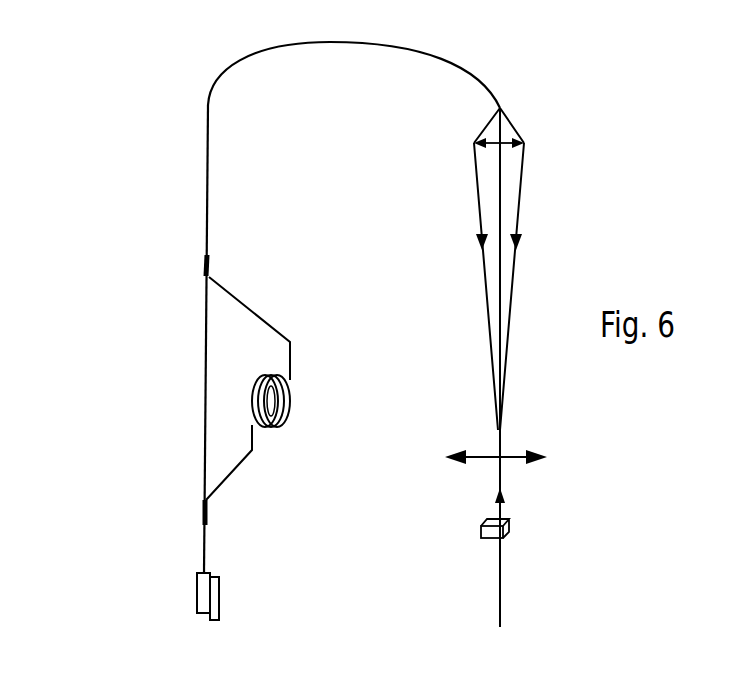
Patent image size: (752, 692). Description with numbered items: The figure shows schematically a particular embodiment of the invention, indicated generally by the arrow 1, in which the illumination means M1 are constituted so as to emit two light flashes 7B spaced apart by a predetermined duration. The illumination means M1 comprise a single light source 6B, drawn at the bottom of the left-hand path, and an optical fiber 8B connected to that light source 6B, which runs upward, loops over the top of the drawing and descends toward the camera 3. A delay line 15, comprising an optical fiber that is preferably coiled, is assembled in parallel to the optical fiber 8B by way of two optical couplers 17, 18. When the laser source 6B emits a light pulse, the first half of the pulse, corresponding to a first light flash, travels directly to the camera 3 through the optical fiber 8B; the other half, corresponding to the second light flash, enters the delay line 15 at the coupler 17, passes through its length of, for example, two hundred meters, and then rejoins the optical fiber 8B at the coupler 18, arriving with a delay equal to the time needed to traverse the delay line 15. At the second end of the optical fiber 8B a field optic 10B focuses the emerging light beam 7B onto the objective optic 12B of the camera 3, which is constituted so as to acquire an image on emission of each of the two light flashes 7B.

The yarn feeding / texturing system 1 is at (150, 93).
The optical fiber 8B is at (210, 133).
The optical coupler 18 is at (210, 263).
The delay line 15 is at (248, 460).
The optical coupler 17 is at (210, 512).
The light source 6B is at (219, 600).
The illumination means M1 is at (176, 524).
The field optic 10B is at (518, 125).
The light flashes 7B is at (516, 263).
The objective optic 12B is at (508, 452).
The camera 3 is at (510, 527).